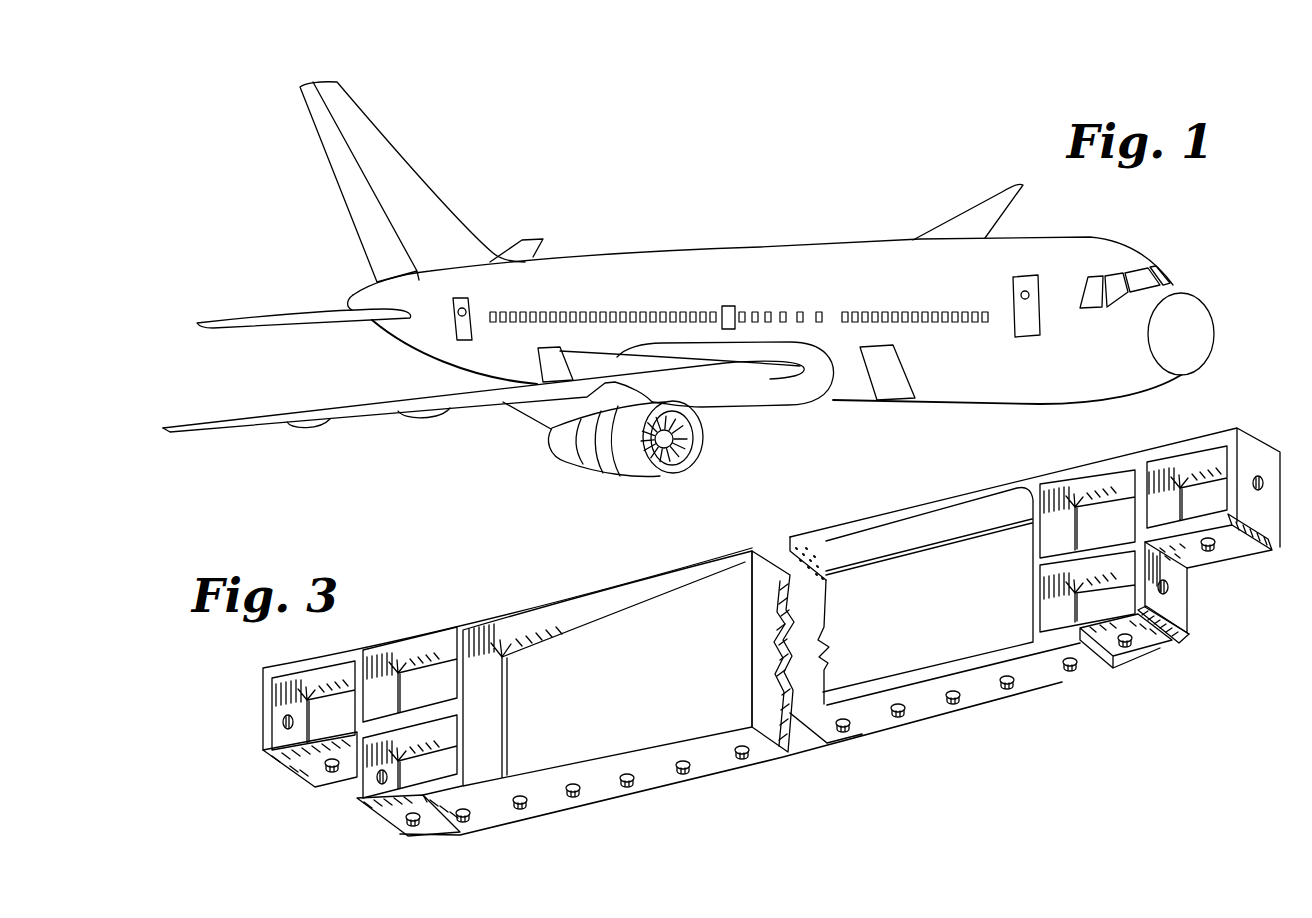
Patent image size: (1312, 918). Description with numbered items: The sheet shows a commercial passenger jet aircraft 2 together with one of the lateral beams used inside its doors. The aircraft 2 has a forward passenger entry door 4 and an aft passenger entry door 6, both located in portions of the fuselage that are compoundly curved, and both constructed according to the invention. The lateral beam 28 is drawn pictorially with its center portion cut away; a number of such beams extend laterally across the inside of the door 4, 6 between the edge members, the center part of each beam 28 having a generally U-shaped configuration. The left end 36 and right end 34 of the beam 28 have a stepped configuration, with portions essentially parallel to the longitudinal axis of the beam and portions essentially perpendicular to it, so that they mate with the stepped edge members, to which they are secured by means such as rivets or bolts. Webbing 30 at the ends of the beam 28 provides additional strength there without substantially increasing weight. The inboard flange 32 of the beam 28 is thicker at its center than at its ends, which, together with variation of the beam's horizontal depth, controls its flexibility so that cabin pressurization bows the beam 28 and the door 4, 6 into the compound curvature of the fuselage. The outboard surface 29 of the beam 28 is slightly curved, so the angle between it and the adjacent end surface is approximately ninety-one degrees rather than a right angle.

In FIG. 1, the aircraft 2 is at (744, 223).
In FIG. 1, the forward door 4 is at (1028, 327).
In FIG. 1, the aft door 6 is at (455, 331).
In FIG. 3, the beam 28 is at (1102, 705).
In FIG. 3, the outboard surface 29 is at (607, 792).
In FIG. 3, the webbing 30 is at (1148, 462).
In FIG. 3, the inboard flange 32 is at (588, 590).
In FIG. 3, the right end 34 is at (1152, 650).
In FIG. 3, the left end 36 is at (387, 817).